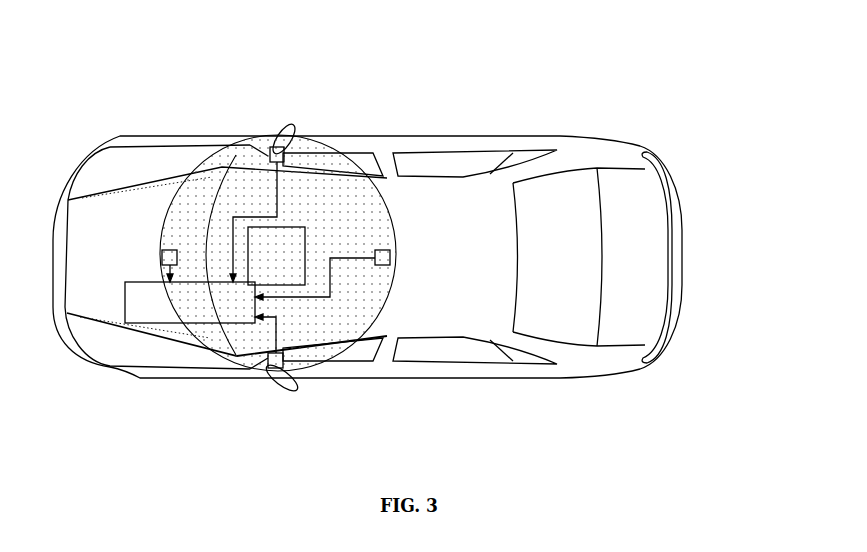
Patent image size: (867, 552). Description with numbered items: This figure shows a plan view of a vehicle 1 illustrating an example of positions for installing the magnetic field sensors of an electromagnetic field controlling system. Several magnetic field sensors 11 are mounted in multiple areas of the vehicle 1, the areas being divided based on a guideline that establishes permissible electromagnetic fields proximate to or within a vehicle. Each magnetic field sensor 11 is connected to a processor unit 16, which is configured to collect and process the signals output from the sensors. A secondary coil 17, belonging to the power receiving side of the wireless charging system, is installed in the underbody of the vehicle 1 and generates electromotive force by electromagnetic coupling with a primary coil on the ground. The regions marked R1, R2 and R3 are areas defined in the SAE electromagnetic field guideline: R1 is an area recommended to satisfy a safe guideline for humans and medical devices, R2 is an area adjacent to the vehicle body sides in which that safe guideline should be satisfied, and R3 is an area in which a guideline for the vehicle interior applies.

The vehicle 1 is at (687, 148).
The magnetic field sensor 11 is at (262, 146).
The processor unit 16 is at (161, 320).
The secondary coil 17 is at (283, 277).
The area R1 is at (187, 170).
The area R2 is at (359, 120).
The area R3 is at (449, 204).